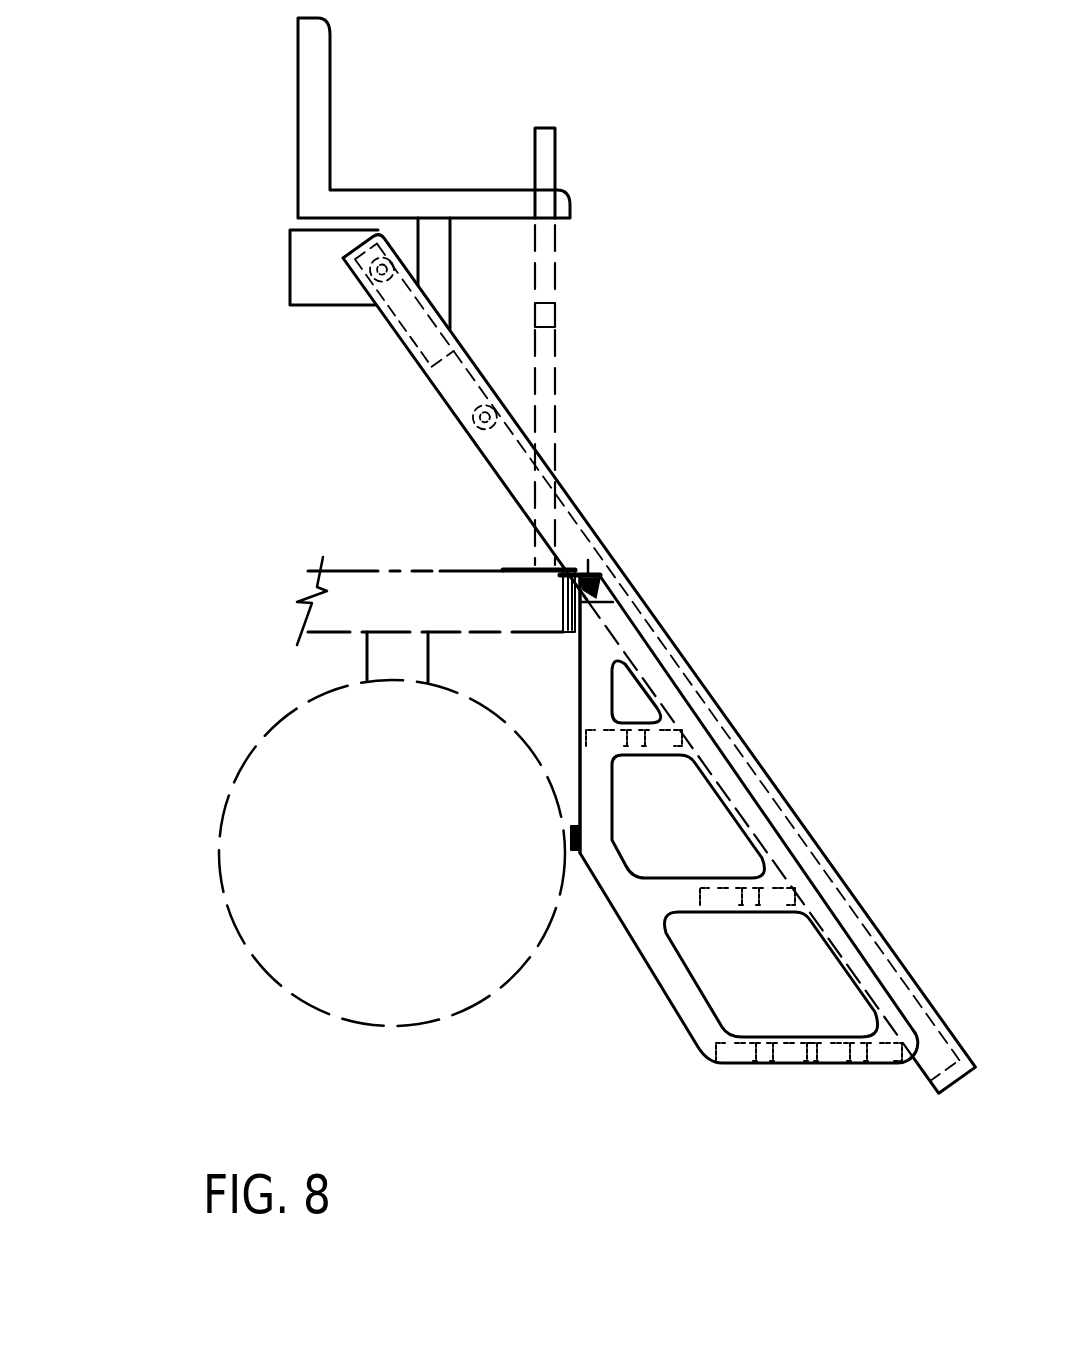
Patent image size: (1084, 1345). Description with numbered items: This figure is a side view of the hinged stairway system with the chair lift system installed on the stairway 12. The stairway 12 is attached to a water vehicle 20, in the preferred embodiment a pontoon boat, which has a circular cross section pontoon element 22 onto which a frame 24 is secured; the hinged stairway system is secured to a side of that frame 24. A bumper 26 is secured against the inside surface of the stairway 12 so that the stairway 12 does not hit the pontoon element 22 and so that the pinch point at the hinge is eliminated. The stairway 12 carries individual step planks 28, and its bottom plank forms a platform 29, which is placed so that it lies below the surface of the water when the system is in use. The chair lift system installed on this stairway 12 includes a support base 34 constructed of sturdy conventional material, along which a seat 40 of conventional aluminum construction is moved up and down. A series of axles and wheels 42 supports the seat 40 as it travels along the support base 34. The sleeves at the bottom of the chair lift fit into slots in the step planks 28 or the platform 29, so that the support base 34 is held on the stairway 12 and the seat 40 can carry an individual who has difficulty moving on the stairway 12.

The stairway 12 is at (775, 865).
The water vehicle 20 is at (324, 773).
The pontoon element 22 is at (407, 846).
The frame 24 is at (375, 580).
The bumper 26 is at (578, 858).
The step plank 28 is at (640, 730).
The platform 29 is at (880, 1042).
The support base 34 is at (843, 903).
The seat 40 is at (401, 204).
The axles and wheels 42 is at (700, 631).